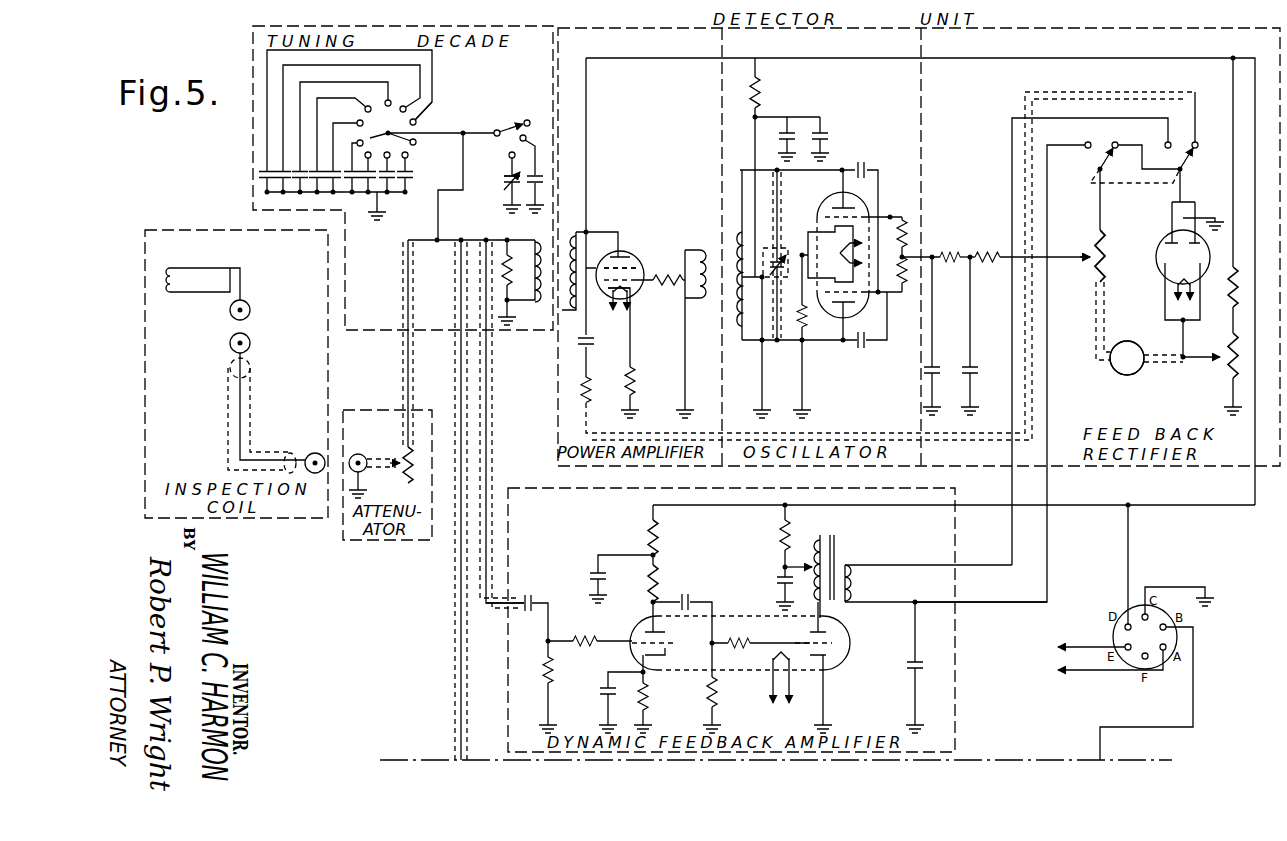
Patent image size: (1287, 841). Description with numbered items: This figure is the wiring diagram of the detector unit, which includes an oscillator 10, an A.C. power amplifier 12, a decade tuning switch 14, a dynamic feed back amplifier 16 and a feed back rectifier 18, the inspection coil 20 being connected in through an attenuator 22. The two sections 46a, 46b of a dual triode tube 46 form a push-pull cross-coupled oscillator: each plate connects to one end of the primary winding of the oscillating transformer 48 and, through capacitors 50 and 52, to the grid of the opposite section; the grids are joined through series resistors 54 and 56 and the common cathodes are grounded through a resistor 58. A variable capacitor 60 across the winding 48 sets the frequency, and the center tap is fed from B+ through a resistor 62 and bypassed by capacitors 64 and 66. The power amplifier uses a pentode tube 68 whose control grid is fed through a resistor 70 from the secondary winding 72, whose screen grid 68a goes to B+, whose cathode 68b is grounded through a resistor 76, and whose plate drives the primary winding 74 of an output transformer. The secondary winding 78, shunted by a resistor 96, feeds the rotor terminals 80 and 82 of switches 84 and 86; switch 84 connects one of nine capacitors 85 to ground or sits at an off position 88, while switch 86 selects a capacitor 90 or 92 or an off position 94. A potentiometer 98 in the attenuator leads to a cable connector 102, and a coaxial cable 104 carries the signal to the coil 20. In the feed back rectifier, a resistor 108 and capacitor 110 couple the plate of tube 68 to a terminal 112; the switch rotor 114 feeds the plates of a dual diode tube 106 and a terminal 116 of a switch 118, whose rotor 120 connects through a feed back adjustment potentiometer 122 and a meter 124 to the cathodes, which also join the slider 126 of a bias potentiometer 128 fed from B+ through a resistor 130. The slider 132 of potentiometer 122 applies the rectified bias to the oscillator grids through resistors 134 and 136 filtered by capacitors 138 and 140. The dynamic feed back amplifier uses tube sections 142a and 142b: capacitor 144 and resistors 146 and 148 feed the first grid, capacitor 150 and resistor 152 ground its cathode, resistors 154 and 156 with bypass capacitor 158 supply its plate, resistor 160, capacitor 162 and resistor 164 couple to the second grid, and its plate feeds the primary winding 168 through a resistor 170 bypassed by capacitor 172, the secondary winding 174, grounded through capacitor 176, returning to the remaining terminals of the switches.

The oscillator 10 is at (905, 100).
The A.C. power amplifier 12 is at (617, 26).
The decade tuning switch 14 is at (439, 86).
The dynamic feed back amplifier 16 is at (958, 553).
The feed back rectifier 18 is at (1108, 382).
The inspection coil 20 is at (170, 268).
The attenuator 22 is at (388, 418).
The dual triode tube 46 is at (816, 206).
The tube section 46a is at (858, 212).
The tube section 46b is at (866, 306).
The oscillating transformer 48 is at (738, 352).
The capacitor 50 is at (862, 162).
The capacitor 52 is at (860, 350).
The resistor 54 is at (915, 237).
The resistor 56 is at (906, 287).
The resistor 58 is at (800, 330).
The variable capacitor 60 is at (782, 256).
The resistor 62 is at (762, 88).
The capacitor 64 is at (781, 138).
The capacitor 66 is at (826, 137).
The power-beam pentode tube 68 is at (620, 250).
The screen grid 68a is at (625, 266).
The cathode 68b is at (637, 292).
The resistor 70 is at (667, 276).
The secondary winding 72 is at (697, 252).
The primary winding 74 is at (571, 312).
The resistor 76 is at (638, 378).
The secondary winding 78 is at (534, 246).
The rotor terminal 80 is at (429, 127).
The rotor terminal 82 is at (496, 131).
The switch 84 is at (424, 118).
The capacitors 85 is at (416, 178).
The switch 86 is at (506, 128).
The off position 88 is at (415, 146).
The capacitor 90 is at (507, 184).
The capacitor 92 is at (510, 177).
The off position 94 is at (526, 119).
The resistor 96 is at (500, 271).
The potentiometer 98 is at (403, 475).
The cable connector 102 is at (358, 453).
The coaxial cable 104 is at (257, 386).
The dual diode tube 106 is at (1163, 270).
The resistor 108 is at (590, 390).
The capacitor 110 is at (594, 341).
The switch terminal 112 is at (1203, 141).
The switch rotor 114 is at (1184, 170).
The switch terminal 116 is at (1118, 145).
The switch 118 is at (1093, 136).
The switch rotor 120 is at (1097, 170).
The feed back adjustment potentiometer 122 is at (1106, 246).
The meter 124 is at (1131, 376).
The slider 126 is at (1218, 360).
The bias potentiometer 128 is at (1228, 342).
The resistor 130 is at (1243, 195).
The slider 132 is at (1088, 256).
The resistor 134 is at (944, 254).
The resistor 136 is at (986, 252).
The capacitor 138 is at (940, 363).
The capacitor 140 is at (980, 363).
The tube section 142a is at (641, 614).
The tube section 142b is at (840, 665).
The capacitor 144 is at (526, 595).
The resistor 146 is at (590, 637).
The resistor 148 is at (545, 668).
The capacitor 150 is at (600, 690).
The resistor 152 is at (647, 690).
The resistor 154 is at (648, 590).
The resistor 156 is at (648, 530).
The capacitor 158 is at (590, 575).
The resistor 160 is at (745, 640).
The capacitor 162 is at (700, 582).
The resistor 164 is at (716, 690).
The coupling transformer primary winding 168 is at (817, 541).
The resistor 170 is at (780, 535).
The capacitor 172 is at (778, 581).
The transformer secondary winding 174 is at (853, 583).
The capacitor 176 is at (925, 668).